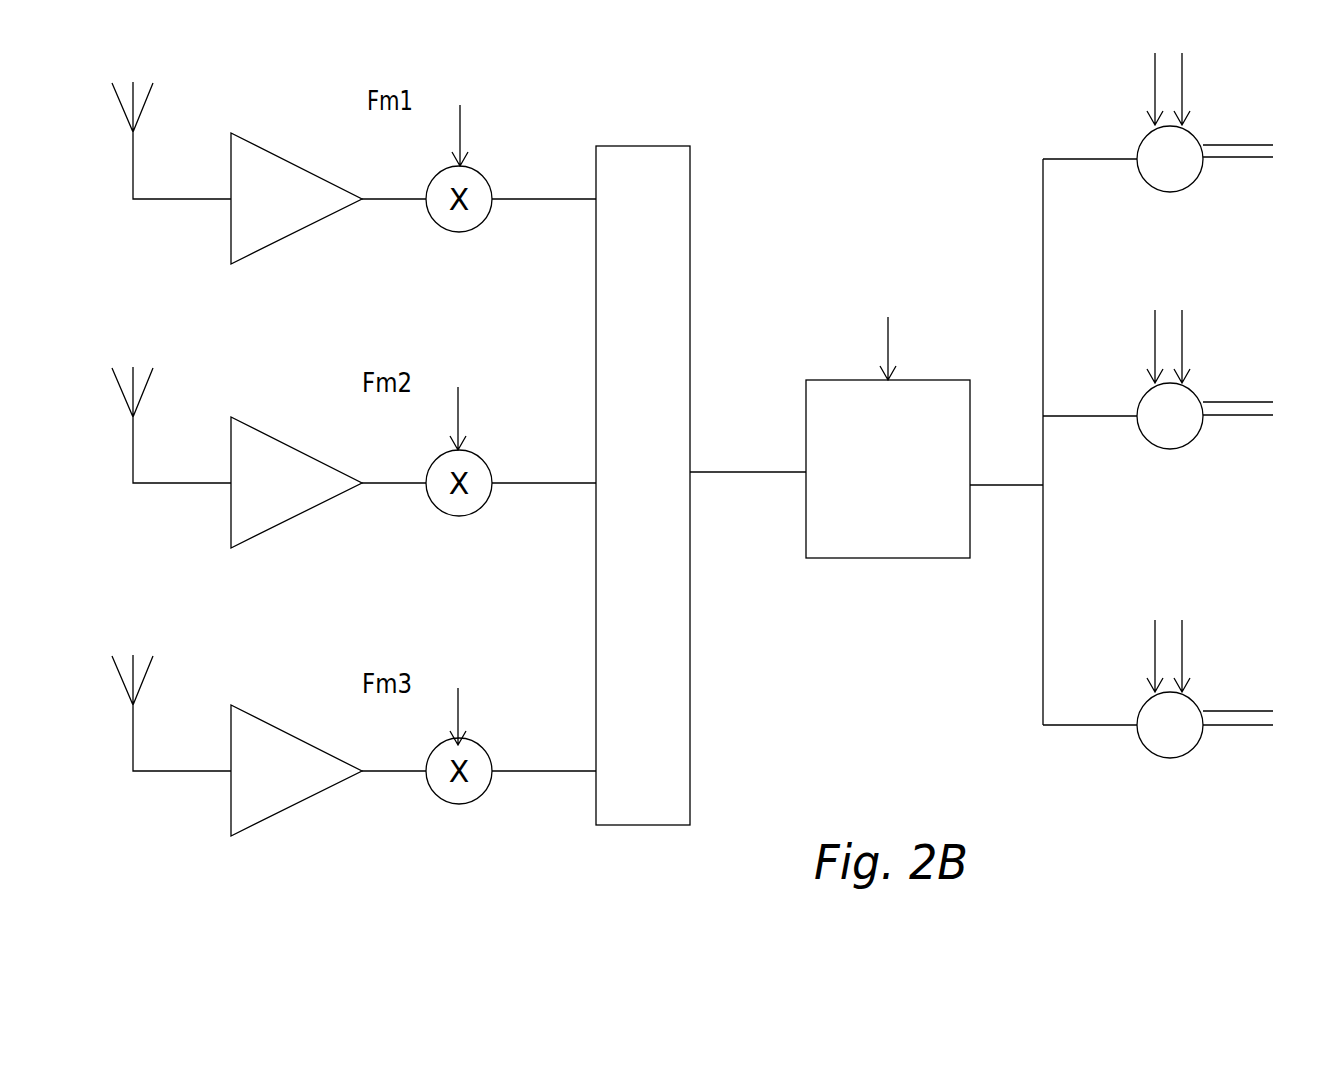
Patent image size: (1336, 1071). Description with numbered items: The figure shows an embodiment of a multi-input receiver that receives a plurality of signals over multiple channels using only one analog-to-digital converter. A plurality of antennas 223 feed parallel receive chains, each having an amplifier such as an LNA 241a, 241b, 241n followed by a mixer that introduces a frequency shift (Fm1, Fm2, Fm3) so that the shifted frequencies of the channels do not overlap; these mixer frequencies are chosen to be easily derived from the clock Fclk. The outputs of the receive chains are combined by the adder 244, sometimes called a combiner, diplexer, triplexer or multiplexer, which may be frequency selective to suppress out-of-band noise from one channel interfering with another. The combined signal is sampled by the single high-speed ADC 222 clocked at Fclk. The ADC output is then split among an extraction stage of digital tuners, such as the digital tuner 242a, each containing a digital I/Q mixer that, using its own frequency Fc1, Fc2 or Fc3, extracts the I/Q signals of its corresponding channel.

The antennas 223 is at (152, 426).
The low noise amplifier 241a is at (295, 216).
The low noise amplifier 241b is at (295, 500).
The low noise amplifier 241n is at (296, 791).
The adder 244 is at (631, 467).
The ADC 222 is at (888, 413).
The digital tuner 242a is at (1108, 125).